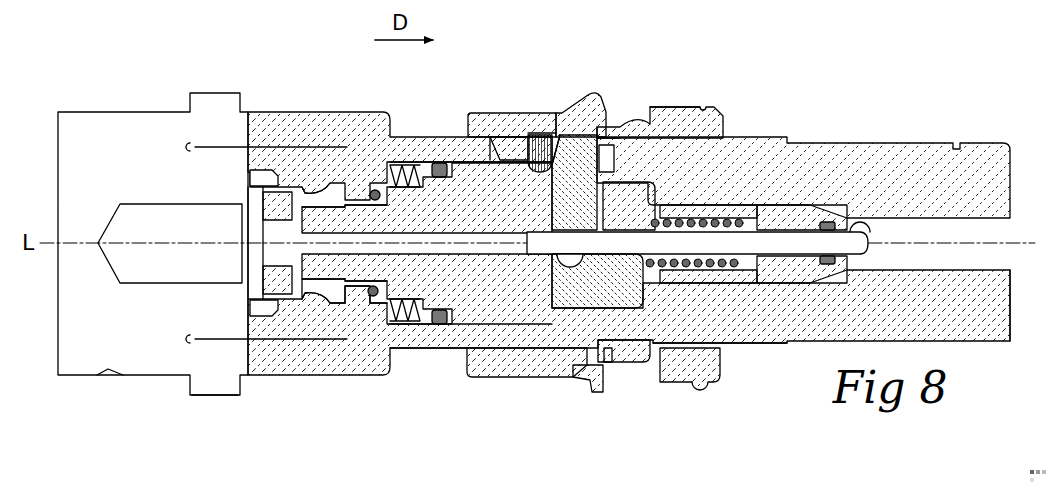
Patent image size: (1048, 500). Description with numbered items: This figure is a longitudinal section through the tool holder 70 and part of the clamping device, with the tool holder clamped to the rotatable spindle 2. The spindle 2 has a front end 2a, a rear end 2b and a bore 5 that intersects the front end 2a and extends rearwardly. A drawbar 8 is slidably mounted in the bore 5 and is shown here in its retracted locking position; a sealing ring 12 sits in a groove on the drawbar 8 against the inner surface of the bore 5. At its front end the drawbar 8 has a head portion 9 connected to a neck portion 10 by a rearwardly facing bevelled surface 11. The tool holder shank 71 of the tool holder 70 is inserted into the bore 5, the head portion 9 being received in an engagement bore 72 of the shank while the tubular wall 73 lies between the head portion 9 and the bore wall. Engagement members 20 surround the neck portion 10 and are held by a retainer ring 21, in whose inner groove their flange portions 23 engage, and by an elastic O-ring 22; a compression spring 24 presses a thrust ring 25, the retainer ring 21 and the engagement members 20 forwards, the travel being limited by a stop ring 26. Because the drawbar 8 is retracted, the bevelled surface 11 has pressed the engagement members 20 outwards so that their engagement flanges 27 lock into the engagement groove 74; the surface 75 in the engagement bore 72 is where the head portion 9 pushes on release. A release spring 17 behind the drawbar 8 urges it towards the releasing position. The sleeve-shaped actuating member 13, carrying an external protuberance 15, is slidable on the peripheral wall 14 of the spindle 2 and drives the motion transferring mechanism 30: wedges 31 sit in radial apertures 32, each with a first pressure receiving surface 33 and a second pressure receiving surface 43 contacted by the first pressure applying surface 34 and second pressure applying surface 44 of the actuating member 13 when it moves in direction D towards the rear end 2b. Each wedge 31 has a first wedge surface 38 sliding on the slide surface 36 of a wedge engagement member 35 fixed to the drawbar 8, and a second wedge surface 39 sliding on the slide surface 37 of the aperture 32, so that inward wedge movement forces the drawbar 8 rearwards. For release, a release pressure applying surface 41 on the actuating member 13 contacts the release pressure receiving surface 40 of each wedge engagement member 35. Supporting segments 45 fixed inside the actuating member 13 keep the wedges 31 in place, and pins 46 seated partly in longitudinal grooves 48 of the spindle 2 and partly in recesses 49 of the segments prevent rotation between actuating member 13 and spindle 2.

The spindle 2 is at (878, 158).
The front end 2a is at (196, 404).
The rear end 2b is at (997, 354).
The bore 5 is at (657, 288).
The drawbar 8 is at (482, 293).
The head portion 9 is at (292, 193).
The neck portion 10 is at (337, 203).
The bevelled surface 11 is at (309, 195).
The sealing ring 12 is at (438, 165).
The actuating member 13 is at (520, 367).
The peripheral wall 14 is at (460, 350).
The external protuberance 15 is at (597, 387).
The release spring 17 is at (728, 220).
The engagement members 20 is at (325, 303).
The retainer ring 21 is at (368, 303).
The O-ring 22 is at (380, 296).
The flange portion 23 is at (358, 303).
The compression spring 24 is at (408, 296).
The thrust ring 25 is at (400, 305).
The stop ring 26 is at (345, 298).
The engagement flange 27 is at (313, 303).
The motion transferring mechanism 30 is at (598, 137).
The wedge 31 is at (517, 162).
The aperture 32 is at (528, 158).
The first pressure receiving surface 33 is at (538, 131).
The first pressure applying surface 34 is at (542, 133).
The wedge engagement member 35 is at (613, 177).
The slide surface 36 is at (560, 133).
The slide surface 37 is at (525, 157).
The first wedge surface 38 is at (555, 157).
The second wedge surface 39 is at (517, 143).
The release pressure receiving surface 40 is at (622, 130).
The release pressure applying surface 41 is at (662, 122).
The second pressure receiving surface 43 is at (532, 133).
The second pressure applying surface 44 is at (601, 136).
The supporting segment 45 is at (612, 363).
The pin 46 is at (641, 352).
The longitudinal groove 48 is at (682, 344).
The recess 49 is at (633, 360).
The tool holder 70 is at (118, 108).
The tool holder shank 71 is at (248, 160).
The engagement bore 72 is at (275, 188).
The tubular wall 73 is at (298, 158).
The engagement groove 74 is at (303, 297).
The surface 75 is at (248, 292).